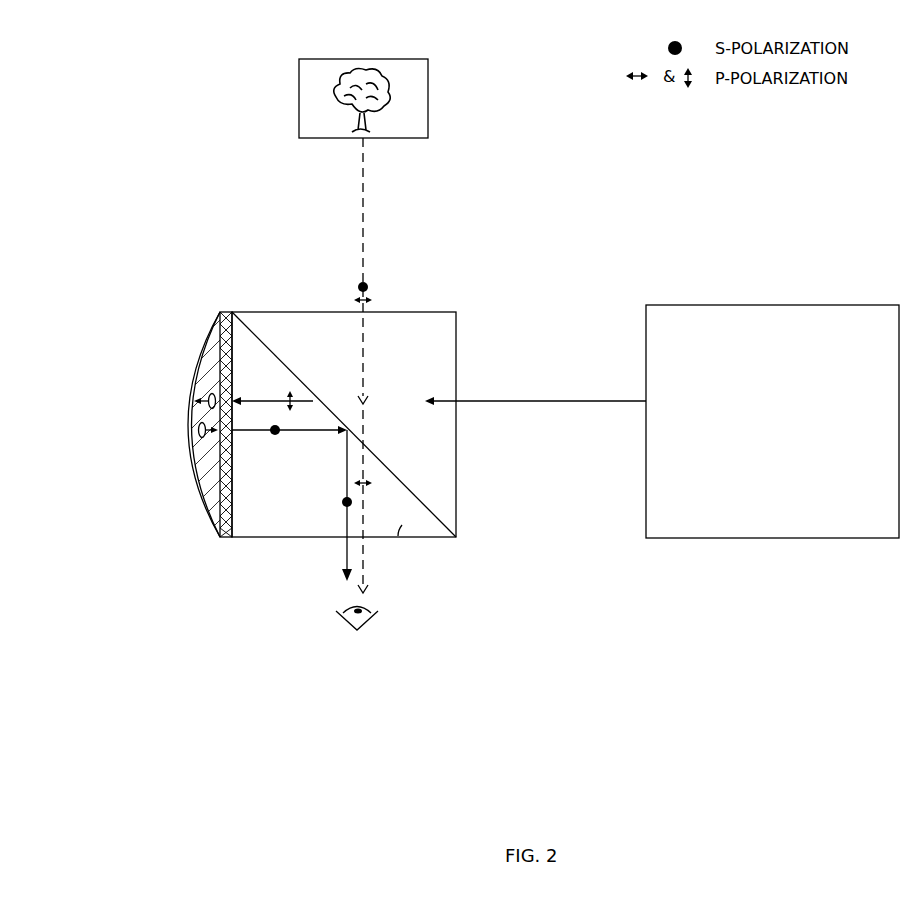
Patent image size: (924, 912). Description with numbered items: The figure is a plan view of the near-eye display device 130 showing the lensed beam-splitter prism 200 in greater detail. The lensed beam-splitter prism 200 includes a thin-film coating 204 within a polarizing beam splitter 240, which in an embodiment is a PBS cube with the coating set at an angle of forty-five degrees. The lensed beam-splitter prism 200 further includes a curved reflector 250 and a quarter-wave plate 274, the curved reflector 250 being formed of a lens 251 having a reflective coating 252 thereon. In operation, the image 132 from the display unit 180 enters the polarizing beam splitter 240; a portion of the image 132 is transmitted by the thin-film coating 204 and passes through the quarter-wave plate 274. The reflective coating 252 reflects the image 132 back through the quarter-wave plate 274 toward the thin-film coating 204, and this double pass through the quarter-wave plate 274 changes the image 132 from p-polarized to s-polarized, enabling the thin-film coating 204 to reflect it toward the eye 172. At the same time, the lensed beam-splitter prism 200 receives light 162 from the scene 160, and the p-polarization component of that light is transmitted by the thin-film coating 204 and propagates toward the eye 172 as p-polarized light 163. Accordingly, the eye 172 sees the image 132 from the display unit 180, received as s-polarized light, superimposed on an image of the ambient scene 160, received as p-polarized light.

The near-eye display device 130 is at (203, 99).
The scene 160 is at (415, 138).
The light 162 is at (366, 219).
The p-polarized light 163 is at (365, 548).
The polarizing beam splitter 240 is at (270, 347).
The thin-film coating 204 is at (403, 486).
The quarter-wave plate 274 is at (225, 311).
The curved reflector 250 is at (195, 430).
The lens 251 is at (190, 438).
The reflective coating 252 is at (212, 518).
The image 132 is at (487, 401).
The eye 172 is at (360, 628).
The lensed beam-splitter prism 200 is at (478, 690).
The display unit 180 is at (757, 444).